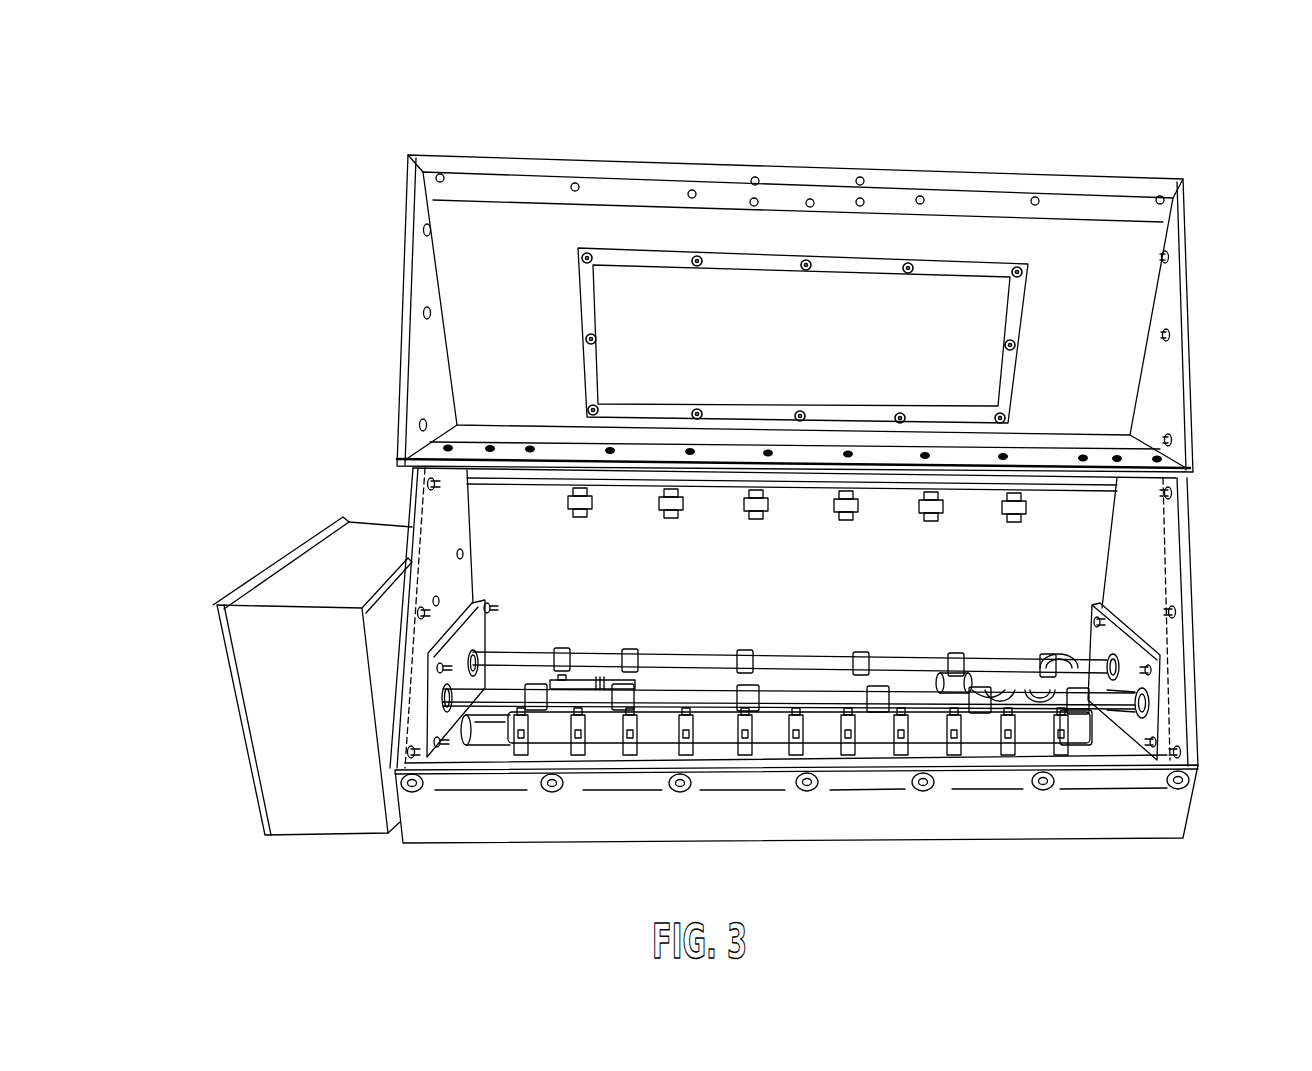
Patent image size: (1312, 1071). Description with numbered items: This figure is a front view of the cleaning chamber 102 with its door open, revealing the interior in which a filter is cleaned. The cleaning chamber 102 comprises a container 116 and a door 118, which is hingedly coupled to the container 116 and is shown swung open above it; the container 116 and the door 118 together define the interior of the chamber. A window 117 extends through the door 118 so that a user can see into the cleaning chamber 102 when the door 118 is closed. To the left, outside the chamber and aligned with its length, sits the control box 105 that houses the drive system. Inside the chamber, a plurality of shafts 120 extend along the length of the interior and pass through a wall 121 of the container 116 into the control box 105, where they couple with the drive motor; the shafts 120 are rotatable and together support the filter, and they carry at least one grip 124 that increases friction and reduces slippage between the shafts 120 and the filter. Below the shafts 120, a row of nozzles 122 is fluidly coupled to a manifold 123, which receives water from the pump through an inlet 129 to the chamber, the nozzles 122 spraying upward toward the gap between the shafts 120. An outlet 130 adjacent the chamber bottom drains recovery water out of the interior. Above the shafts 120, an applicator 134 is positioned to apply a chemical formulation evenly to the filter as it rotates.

The cleaning chamber 102 is at (1183, 80).
The control box 105 is at (265, 645).
The container 116 is at (1150, 812).
The window 117 is at (738, 305).
The door 118 is at (1098, 293).
The shafts 120 is at (1087, 661).
The wall 121 is at (443, 543).
The nozzles 122 is at (745, 745).
The manifold 123 is at (828, 745).
The grip 124 is at (845, 660).
The inlet 129 is at (974, 680).
The outlet 130 is at (1056, 656).
The applicator 134 is at (1003, 500).